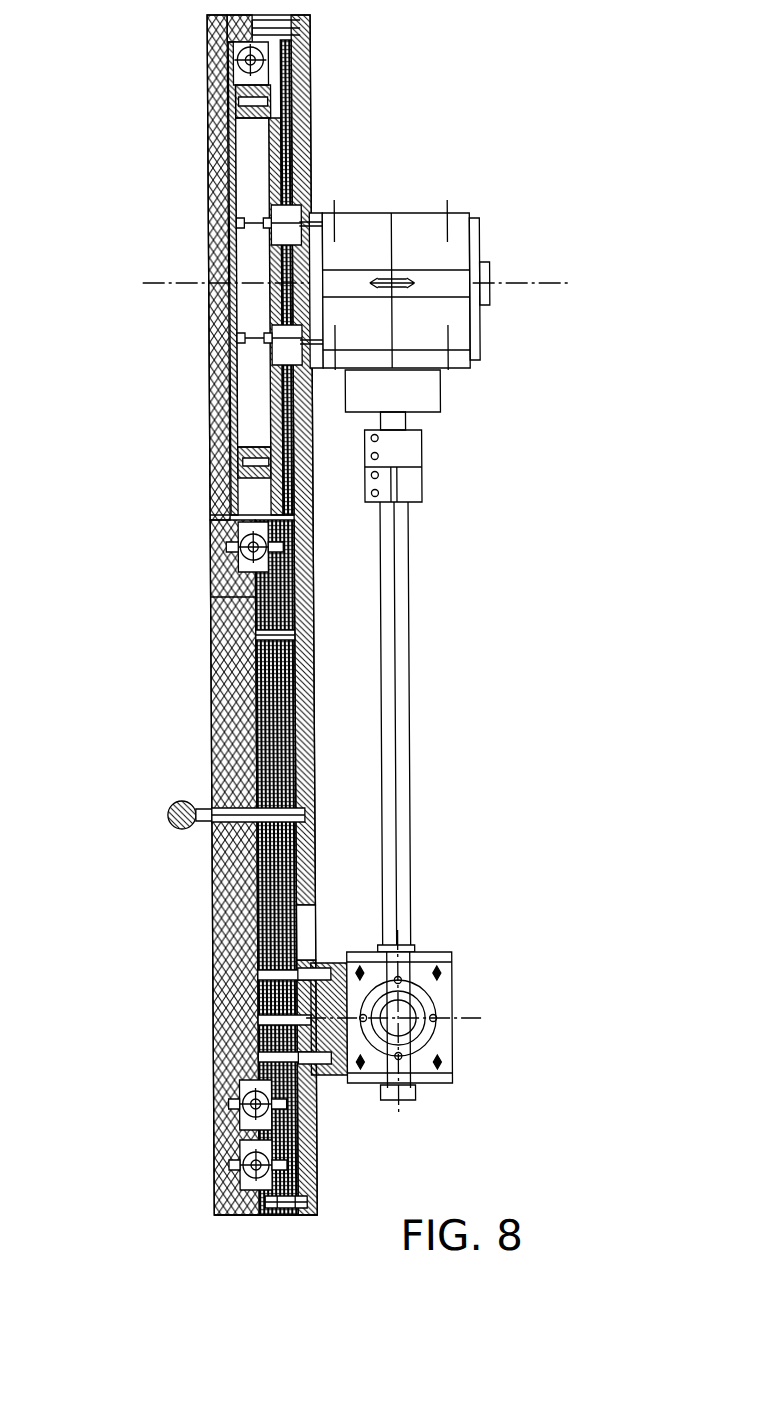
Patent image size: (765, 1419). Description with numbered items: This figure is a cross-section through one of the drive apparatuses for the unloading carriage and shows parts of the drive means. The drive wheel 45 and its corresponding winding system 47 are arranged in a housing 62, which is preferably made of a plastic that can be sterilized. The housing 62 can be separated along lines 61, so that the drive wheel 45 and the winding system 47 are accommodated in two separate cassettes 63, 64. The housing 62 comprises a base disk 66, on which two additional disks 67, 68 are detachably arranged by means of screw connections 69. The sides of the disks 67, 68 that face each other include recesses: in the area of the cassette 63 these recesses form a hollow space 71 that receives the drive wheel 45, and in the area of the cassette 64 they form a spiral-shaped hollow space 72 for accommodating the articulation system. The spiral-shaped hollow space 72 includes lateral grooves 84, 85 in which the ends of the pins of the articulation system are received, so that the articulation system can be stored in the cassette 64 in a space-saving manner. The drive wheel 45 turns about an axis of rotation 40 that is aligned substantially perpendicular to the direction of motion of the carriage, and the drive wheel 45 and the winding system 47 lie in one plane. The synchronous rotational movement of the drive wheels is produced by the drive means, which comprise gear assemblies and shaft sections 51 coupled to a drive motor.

The axis of rotation 40 is at (560, 285).
The drive wheel 45 is at (247, 418).
The winding system 47 is at (208, 960).
The shaft section 51 is at (402, 713).
The separation line 61 is at (208, 520).
The housing 62 is at (208, 597).
The cassette 63 is at (208, 262).
The cassette 64 is at (208, 1038).
The base disk 66 is at (303, 675).
The disk 67 is at (300, 728).
The disk 68 is at (235, 722).
The screw connection 69 is at (178, 832).
The hollow space 71 is at (232, 497).
The spiral-shaped hollow space 72 is at (242, 1106).
The lateral groove 84 is at (210, 1182).
The lateral groove 85 is at (296, 1215).